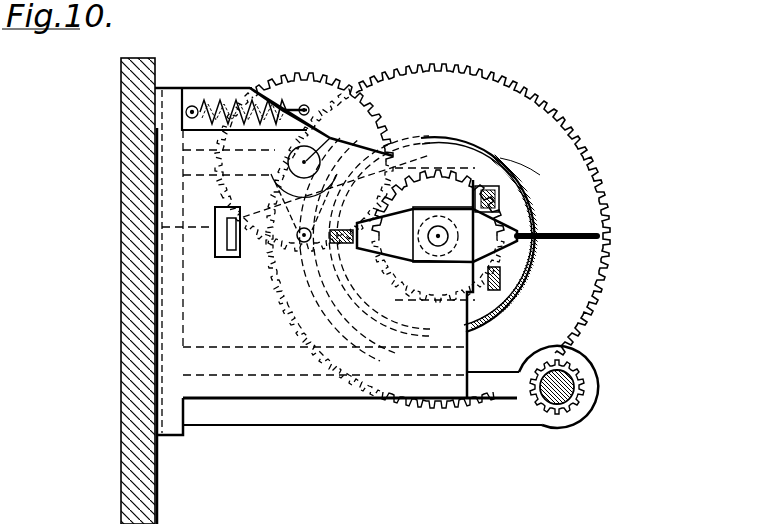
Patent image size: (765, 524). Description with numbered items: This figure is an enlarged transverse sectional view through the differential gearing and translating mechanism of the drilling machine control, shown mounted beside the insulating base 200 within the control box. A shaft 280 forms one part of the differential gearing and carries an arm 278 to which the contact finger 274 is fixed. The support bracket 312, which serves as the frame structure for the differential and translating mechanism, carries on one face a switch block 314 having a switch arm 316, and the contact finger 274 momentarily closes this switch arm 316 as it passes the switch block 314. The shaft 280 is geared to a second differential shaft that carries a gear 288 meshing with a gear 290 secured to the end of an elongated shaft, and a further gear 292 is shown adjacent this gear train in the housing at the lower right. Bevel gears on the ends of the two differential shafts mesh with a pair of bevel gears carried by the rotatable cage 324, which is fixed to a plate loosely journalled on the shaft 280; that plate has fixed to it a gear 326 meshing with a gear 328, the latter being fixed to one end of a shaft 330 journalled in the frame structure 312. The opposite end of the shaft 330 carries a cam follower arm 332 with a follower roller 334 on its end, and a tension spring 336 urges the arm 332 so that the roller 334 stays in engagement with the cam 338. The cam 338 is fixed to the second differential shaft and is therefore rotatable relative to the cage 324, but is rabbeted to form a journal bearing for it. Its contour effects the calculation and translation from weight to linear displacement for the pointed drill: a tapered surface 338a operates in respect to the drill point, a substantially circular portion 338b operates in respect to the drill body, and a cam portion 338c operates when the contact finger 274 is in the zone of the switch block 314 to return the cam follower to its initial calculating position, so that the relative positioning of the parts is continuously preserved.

The insulating base 200 is at (148, 516).
The contact finger 274 is at (575, 233).
The arm 278 is at (500, 205).
The shaft 280 is at (437, 240).
The gear 288 is at (463, 78).
The gear 290 is at (550, 423).
The pinion 292 is at (573, 385).
The support bracket 312 is at (233, 402).
The switch block 314 is at (240, 262).
The switch arm 316 is at (228, 258).
The rotatable cage 324 is at (522, 150).
The gear 326 is at (428, 172).
The gear 328 is at (300, 76).
The shaft 330 is at (366, 106).
The cam follower arm 332 is at (298, 244).
The follower roller 334 is at (250, 212).
The tension spring 336 is at (218, 128).
The cam 338 is at (488, 152).
The tapered surface 338a is at (328, 270).
The substantially circular portion 338b is at (520, 295).
The cam portion 338c is at (346, 241).